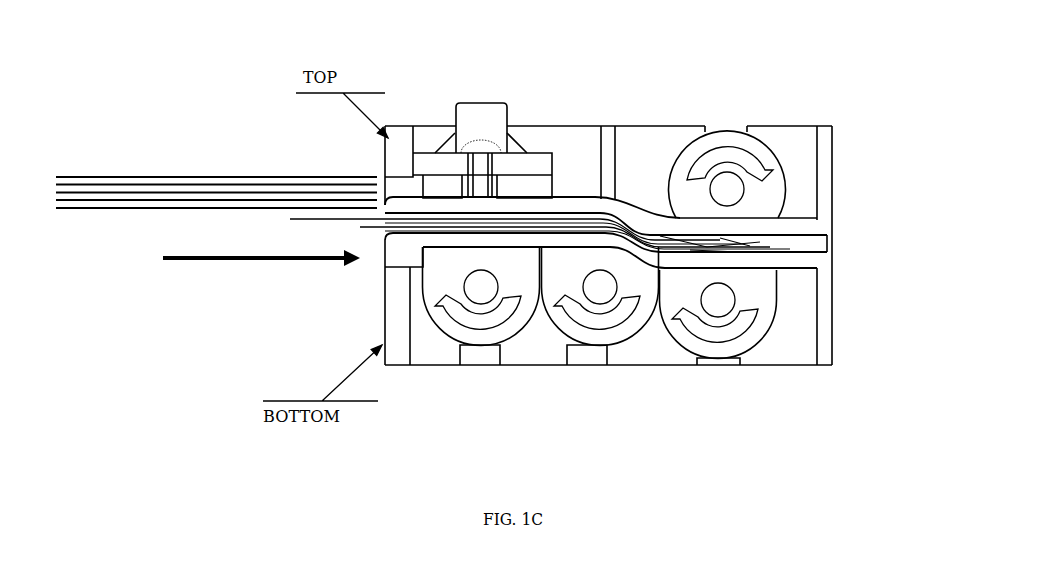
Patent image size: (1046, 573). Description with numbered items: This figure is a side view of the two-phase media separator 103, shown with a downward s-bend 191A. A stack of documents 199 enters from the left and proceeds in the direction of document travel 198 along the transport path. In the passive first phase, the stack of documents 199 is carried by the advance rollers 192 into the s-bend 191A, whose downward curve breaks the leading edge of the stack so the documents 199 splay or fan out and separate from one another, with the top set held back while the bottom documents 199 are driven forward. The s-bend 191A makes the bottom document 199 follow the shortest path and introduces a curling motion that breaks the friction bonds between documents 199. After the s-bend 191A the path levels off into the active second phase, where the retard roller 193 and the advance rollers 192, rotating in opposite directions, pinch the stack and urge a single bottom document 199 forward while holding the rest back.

The two-phase media separator 103 is at (687, 52).
The s-bend 191A is at (610, 205).
The advance rollers 192 is at (718, 352).
The retard roller 193 is at (731, 140).
The document travel 198 is at (261, 283).
The document 199 is at (413, 195).